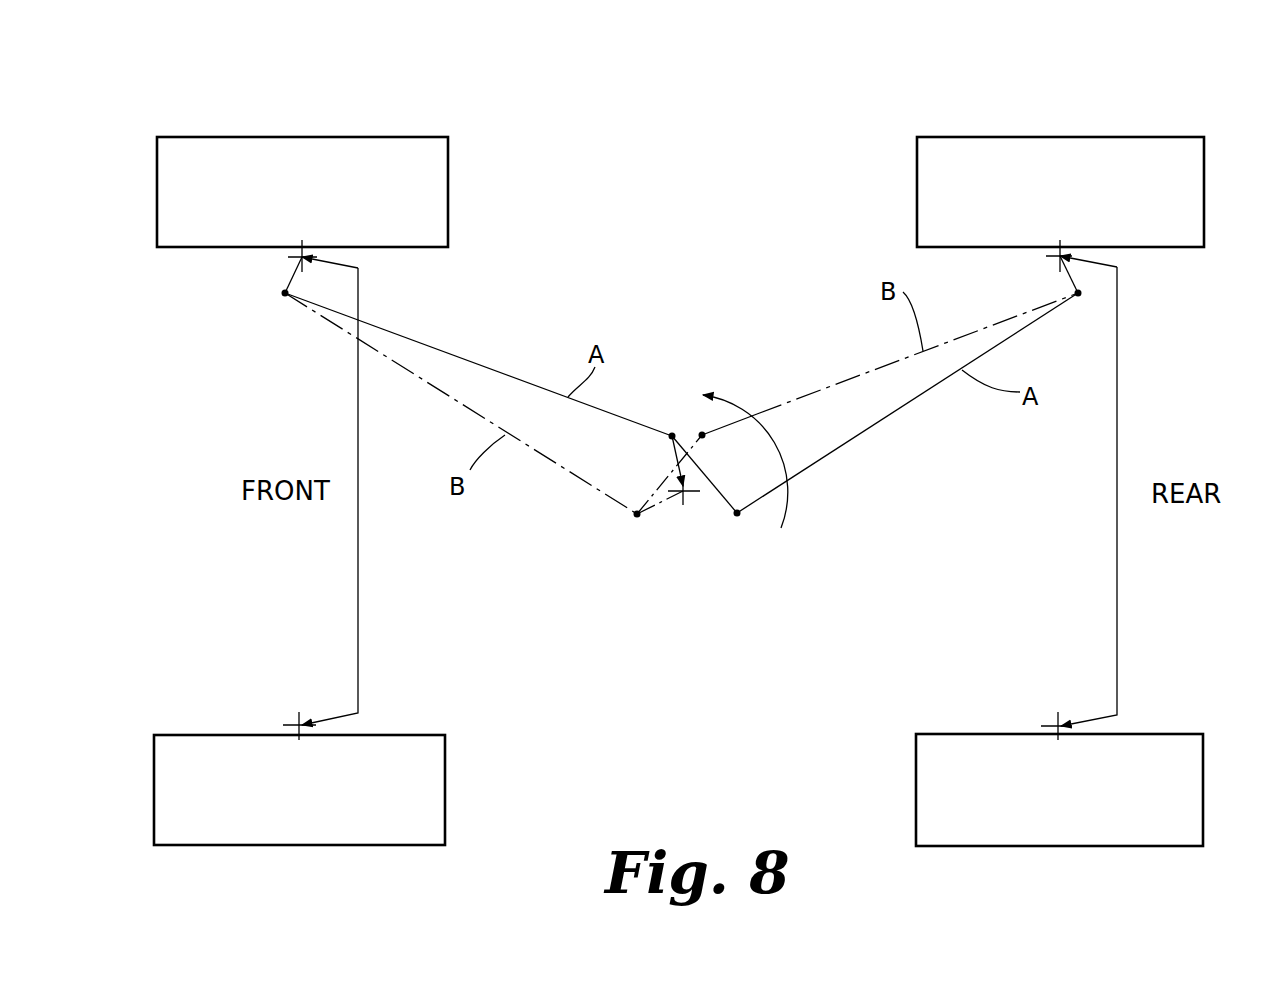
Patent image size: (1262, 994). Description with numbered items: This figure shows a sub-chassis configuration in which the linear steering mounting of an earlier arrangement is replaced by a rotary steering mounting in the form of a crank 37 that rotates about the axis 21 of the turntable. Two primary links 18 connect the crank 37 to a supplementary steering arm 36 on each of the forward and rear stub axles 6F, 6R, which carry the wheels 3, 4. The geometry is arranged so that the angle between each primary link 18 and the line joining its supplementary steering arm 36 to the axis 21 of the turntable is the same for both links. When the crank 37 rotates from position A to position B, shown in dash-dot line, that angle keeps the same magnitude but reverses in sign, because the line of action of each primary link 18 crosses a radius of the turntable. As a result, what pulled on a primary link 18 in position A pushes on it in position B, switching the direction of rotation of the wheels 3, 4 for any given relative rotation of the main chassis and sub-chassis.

The wheel 3 is at (248, 155).
The wheel 4 is at (1147, 150).
The forward stub axle 6F is at (305, 250).
The rear stub axle 6R is at (1062, 250).
The primary link 18 is at (508, 372).
The axis of the turntable 21 is at (683, 492).
The supplementary steering arm 36 is at (1069, 278).
The crank 37 is at (711, 495).